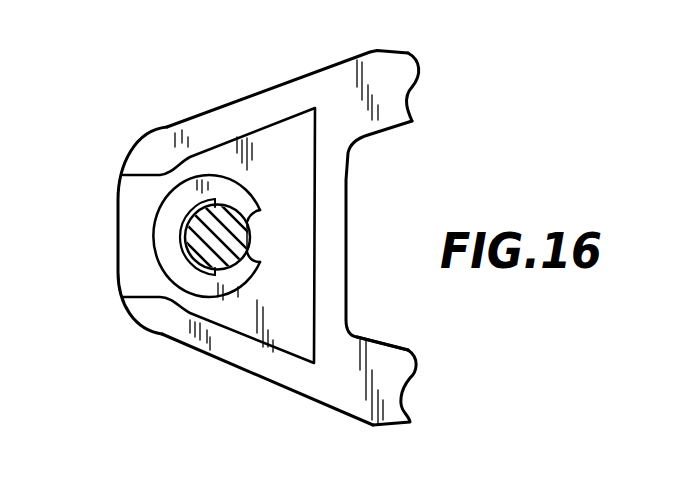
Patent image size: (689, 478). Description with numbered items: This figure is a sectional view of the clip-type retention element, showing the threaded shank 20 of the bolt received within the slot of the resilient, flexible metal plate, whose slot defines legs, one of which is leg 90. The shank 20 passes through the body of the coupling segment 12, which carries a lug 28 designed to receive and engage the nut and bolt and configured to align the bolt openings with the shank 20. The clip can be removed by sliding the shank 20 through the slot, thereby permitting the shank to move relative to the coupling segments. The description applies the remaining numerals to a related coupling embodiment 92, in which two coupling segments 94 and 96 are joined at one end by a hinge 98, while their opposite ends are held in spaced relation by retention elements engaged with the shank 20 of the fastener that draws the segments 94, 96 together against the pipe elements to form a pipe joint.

The coupling segment 12 is at (387, 62).
The lug 28 is at (297, 388).
The leg 90 is at (172, 202).
The coupling embodiment 92 is at (258, 223).
The coupling segment 94 is at (229, 186).
The coupling segment 96 is at (236, 290).
The hinge 98 is at (177, 223).
The threaded shank 20 is at (188, 248).